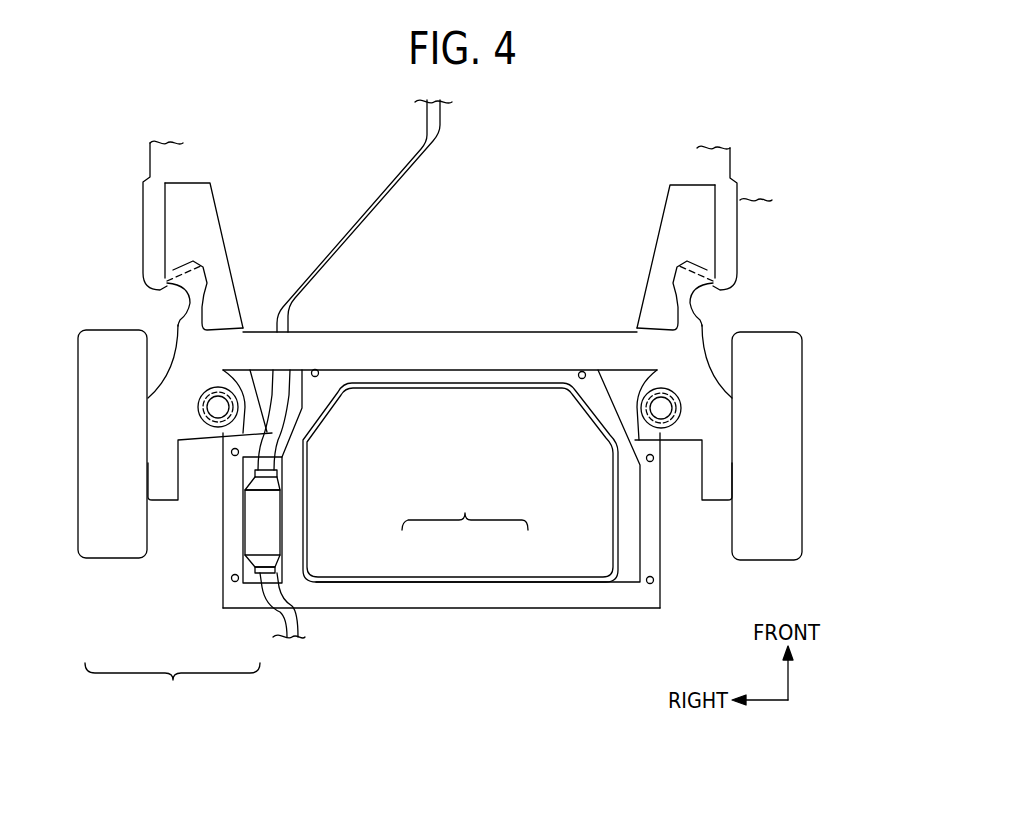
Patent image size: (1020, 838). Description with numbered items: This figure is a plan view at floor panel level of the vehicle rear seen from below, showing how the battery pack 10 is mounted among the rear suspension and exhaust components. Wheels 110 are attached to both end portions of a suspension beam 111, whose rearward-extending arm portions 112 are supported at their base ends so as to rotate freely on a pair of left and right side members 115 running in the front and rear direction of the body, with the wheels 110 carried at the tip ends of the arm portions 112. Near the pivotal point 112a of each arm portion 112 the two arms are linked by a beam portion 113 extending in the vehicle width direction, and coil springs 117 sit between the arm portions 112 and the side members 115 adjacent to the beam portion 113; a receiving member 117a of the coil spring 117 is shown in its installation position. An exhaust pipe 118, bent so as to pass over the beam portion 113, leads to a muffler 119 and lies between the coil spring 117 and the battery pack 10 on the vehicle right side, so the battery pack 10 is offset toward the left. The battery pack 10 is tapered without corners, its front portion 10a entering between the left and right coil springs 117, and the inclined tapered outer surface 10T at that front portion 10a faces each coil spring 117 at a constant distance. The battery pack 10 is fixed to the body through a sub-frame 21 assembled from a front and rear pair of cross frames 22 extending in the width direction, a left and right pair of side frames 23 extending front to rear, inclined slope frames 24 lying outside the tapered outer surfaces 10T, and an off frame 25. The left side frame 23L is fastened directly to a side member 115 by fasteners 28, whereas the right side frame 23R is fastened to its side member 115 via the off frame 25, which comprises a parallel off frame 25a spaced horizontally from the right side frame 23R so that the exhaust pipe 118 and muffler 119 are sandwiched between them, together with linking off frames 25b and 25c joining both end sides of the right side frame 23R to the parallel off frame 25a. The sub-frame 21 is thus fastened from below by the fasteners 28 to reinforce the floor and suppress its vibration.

The battery pack 10 is at (470, 459).
The tapered outer surface 10T is at (340, 390).
The front portion 10a is at (503, 390).
The sub-frame 21 is at (623, 622).
The cross frame 22 is at (476, 360).
The side frame 23 is at (465, 507).
The right side frame 23R is at (307, 527).
The left side frame 23L is at (650, 543).
The slope frame 24 is at (313, 402).
The off frame 25 is at (172, 688).
The parallel off frame 25a is at (258, 508).
The linking off frame 25b is at (238, 462).
The linking off frame 25c is at (250, 602).
The fastener 28 is at (318, 369).
The wheel 110 is at (778, 372).
The suspension beam 111 is at (493, 237).
The arm portion 112 is at (160, 463).
The pivotal point 112a is at (695, 275).
The beam portion 113 is at (430, 356).
The side member 115 is at (172, 302).
The coil spring 117 is at (218, 396).
The receiving member 117a is at (652, 372).
The exhaust pipe 118 is at (385, 188).
The muffler 119 is at (268, 515).